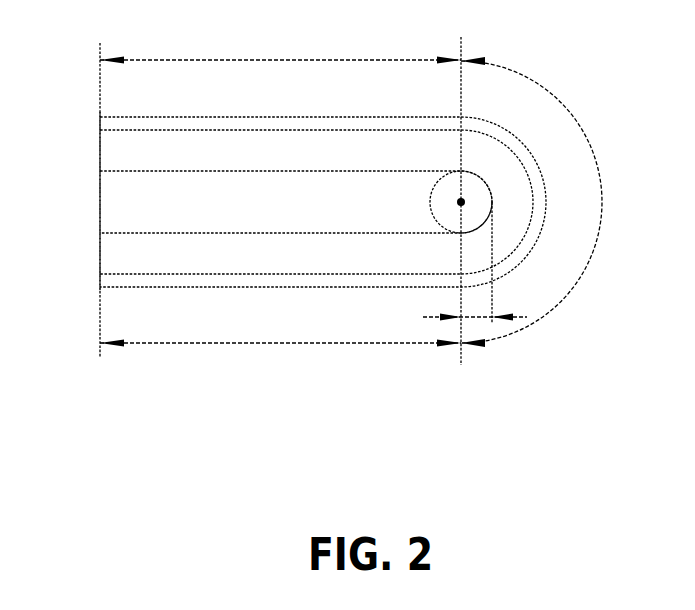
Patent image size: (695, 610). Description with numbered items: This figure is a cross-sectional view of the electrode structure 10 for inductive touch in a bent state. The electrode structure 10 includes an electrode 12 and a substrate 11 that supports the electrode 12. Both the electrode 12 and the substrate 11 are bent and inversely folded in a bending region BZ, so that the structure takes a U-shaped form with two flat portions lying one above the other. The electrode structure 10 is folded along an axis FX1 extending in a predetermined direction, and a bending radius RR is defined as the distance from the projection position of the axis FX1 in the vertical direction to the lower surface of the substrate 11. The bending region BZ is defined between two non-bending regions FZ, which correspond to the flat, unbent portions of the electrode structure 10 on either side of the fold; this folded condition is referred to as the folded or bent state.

The electrode structure 10 is at (76, 84).
The substrate 11 is at (108, 152).
The electrode 12 is at (108, 124).
The axis FX1 is at (457, 203).
The non-bending region FZ is at (280, 188).
The bending region BZ is at (556, 202).
The bending radius RR is at (480, 262).